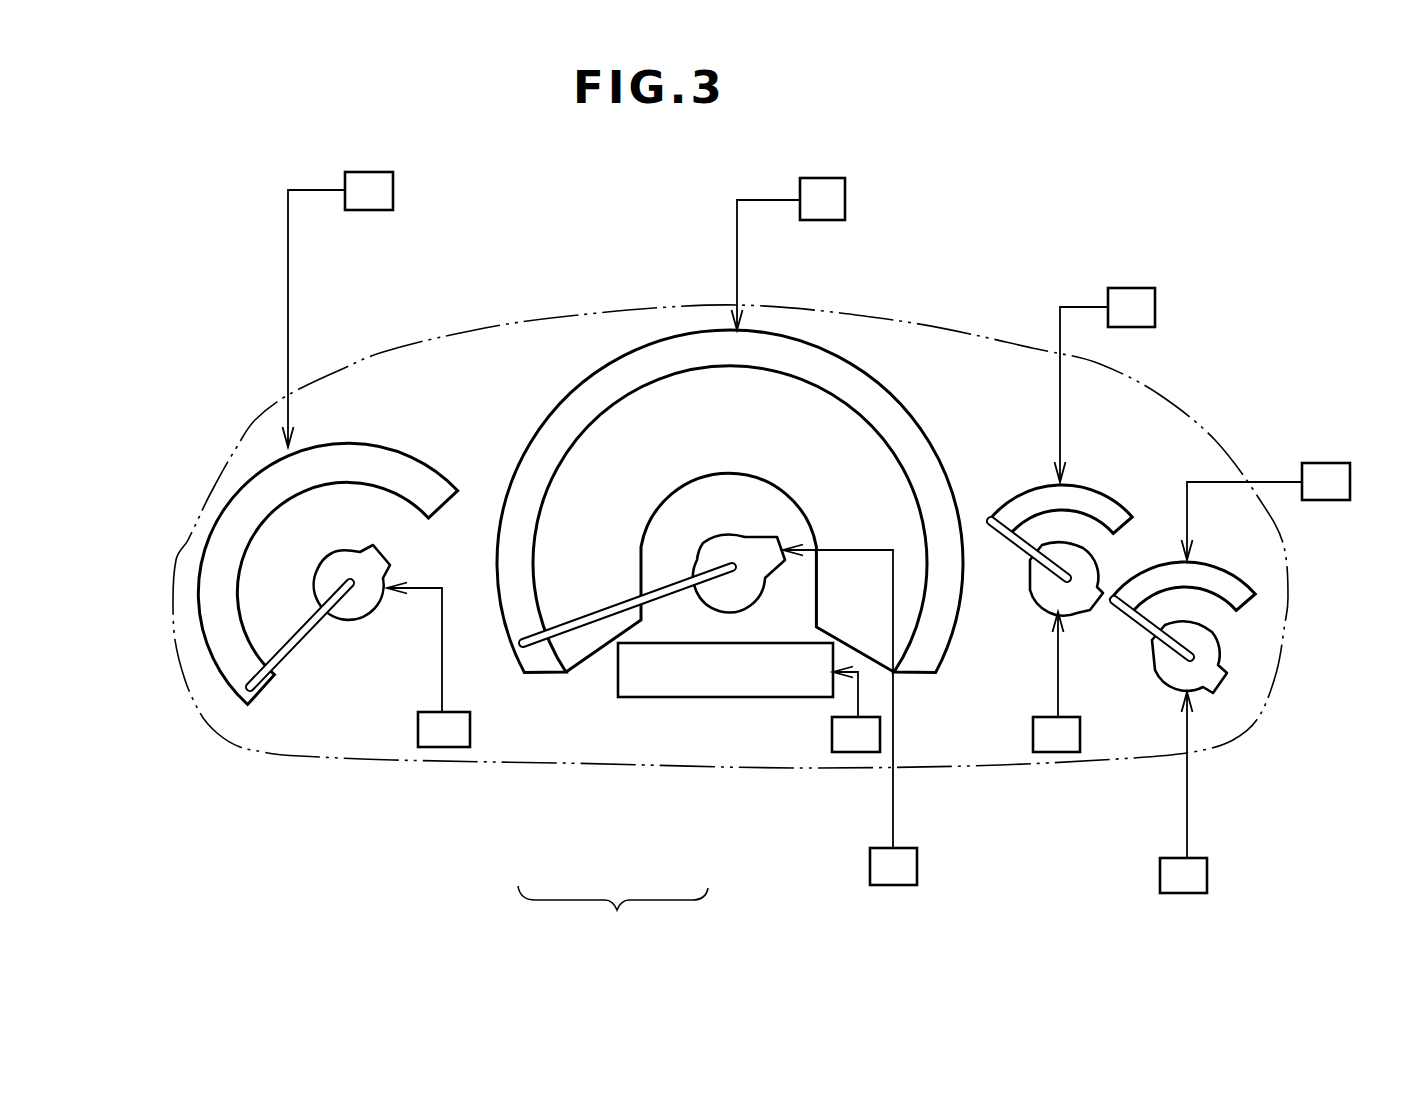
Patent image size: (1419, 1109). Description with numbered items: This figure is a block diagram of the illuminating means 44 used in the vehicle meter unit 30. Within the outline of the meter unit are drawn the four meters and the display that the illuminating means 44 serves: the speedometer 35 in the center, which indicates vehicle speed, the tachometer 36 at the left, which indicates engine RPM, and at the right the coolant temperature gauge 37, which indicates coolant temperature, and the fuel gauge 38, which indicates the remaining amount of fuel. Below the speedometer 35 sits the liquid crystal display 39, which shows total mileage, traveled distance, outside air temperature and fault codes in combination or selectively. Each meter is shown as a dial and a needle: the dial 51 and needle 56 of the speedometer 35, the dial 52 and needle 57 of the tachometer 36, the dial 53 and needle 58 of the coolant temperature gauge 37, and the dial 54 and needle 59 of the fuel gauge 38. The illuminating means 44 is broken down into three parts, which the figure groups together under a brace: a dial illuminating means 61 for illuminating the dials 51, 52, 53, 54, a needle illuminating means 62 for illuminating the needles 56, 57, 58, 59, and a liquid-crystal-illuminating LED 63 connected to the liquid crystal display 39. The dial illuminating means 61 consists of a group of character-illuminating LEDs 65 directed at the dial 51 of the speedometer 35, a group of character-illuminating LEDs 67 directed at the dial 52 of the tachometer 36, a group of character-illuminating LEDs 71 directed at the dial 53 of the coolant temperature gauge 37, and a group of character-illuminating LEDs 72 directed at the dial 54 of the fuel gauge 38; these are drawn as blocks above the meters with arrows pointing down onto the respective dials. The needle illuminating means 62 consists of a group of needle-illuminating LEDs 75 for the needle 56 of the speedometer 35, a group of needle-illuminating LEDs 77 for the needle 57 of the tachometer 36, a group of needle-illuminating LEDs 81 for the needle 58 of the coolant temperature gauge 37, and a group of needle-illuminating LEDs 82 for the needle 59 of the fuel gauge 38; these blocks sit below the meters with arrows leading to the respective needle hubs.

The vehicle meter unit 30 is at (248, 170).
The speedometer 35 is at (753, 465).
The tachometer 36 is at (307, 535).
The coolant temperature gauge 37 is at (1252, 599).
The fuel gauge 38 is at (1125, 480).
The liquid crystal display 39 is at (757, 665).
The illuminating means 44 is at (613, 915).
The dial of the speedometer 51 is at (885, 417).
The dial of the tachometer 52 is at (348, 462).
The dial of the coolant temperature gauge 53 is at (1217, 565).
The dial of the fuel gauge 54 is at (1052, 527).
The needle of the speedometer 56 is at (732, 545).
The needle of the tachometer 57 is at (338, 572).
The needle of the coolant temperature gauge 58 is at (1212, 653).
The needle of the fuel gauge 59 is at (1087, 533).
The dial illuminating means 61 is at (562, 693).
The needle illuminating means 62 is at (717, 617).
The liquid-crystal-illuminating LED 63 is at (832, 736).
The group of character-illuminating LEDs 65 is at (827, 178).
The group of character-illuminating LEDs 67 is at (373, 172).
The group of character-illuminating LEDs 71 is at (1322, 462).
The group of character-illuminating LEDs 72 is at (1135, 287).
The group of needle-illuminating LEDs 75 is at (893, 885).
The group of needle-illuminating LEDs 77 is at (438, 747).
The group of needle-illuminating LEDs 81 is at (1178, 893).
The group of needle-illuminating LEDs 82 is at (1053, 752).